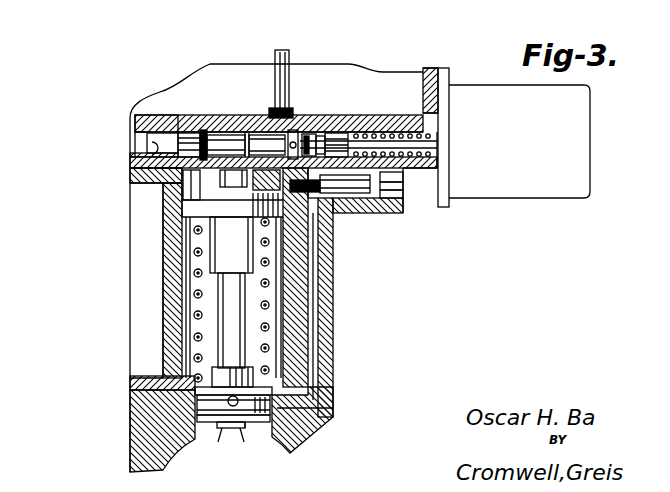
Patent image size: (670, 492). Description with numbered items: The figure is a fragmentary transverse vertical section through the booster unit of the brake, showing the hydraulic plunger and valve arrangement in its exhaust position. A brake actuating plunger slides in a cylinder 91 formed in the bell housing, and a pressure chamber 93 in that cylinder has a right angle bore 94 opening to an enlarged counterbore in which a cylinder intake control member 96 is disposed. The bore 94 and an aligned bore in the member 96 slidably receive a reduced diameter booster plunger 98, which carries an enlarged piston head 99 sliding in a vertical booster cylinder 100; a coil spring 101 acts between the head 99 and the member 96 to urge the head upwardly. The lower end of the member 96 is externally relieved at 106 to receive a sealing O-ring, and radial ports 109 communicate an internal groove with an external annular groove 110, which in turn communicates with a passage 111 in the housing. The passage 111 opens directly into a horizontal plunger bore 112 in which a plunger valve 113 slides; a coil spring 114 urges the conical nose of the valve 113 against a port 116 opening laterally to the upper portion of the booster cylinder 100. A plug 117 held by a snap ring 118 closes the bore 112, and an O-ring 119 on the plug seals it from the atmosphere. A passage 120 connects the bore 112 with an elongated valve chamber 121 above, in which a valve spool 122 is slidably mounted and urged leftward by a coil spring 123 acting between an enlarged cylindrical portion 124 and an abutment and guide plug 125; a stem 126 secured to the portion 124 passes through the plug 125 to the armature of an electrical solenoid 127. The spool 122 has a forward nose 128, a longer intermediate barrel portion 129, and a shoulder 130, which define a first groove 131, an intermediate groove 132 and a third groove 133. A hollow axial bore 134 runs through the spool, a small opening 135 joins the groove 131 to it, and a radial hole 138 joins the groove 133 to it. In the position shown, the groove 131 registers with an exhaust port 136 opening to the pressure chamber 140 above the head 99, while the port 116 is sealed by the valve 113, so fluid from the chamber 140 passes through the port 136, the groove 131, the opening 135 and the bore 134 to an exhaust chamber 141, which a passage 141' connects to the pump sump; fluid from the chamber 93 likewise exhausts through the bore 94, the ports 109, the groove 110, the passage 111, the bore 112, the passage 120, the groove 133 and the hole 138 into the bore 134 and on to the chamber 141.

The cylinder 91 is at (213, 436).
The pressure chamber 93 is at (172, 467).
The right angle bore 94 is at (244, 426).
The cylinder intake control member 96 is at (195, 390).
The booster plunger 98 is at (226, 305).
The piston head 99 is at (186, 213).
The booster cylinder 100 is at (186, 243).
The coil spring 101 is at (268, 327).
The external annular groove 106 is at (217, 428).
The radial ports 109 is at (233, 408).
The external annular groove 110 is at (200, 405).
The passage 111 is at (324, 265).
The plunger bore 112 is at (337, 213).
The plunger valve 113 is at (368, 214).
The coil spring 114 is at (395, 212).
The port 116 is at (262, 172).
The plug 117 is at (403, 192).
The snap ring 118 is at (403, 199).
The O-ring 119 is at (403, 182).
The passage 120 is at (345, 184).
The valve chamber 121 is at (250, 132).
The valve spool 122 is at (204, 134).
The coil spring 123 is at (432, 124).
The enlarged cylindrical portion 124 is at (350, 135).
The abutment and guide plug 125 is at (430, 133).
The stem 126 is at (430, 146).
The electrical solenoid 127 is at (498, 200).
The forward nose 128 is at (180, 118).
The intermediate barrel portion 129 is at (232, 133).
The shoulder 130 is at (320, 132).
The first groove 131 is at (195, 128).
The intermediate groove 132 is at (293, 130).
The third groove 133 is at (314, 132).
The axial bore 134 is at (158, 183).
The small opening 135 is at (226, 145).
The exhaust port 136 is at (198, 185).
The radial hole 138 is at (289, 55).
The pressure chamber 140 is at (212, 187).
The exhaust chamber 141 is at (127, 142).
The passage 141' is at (128, 159).